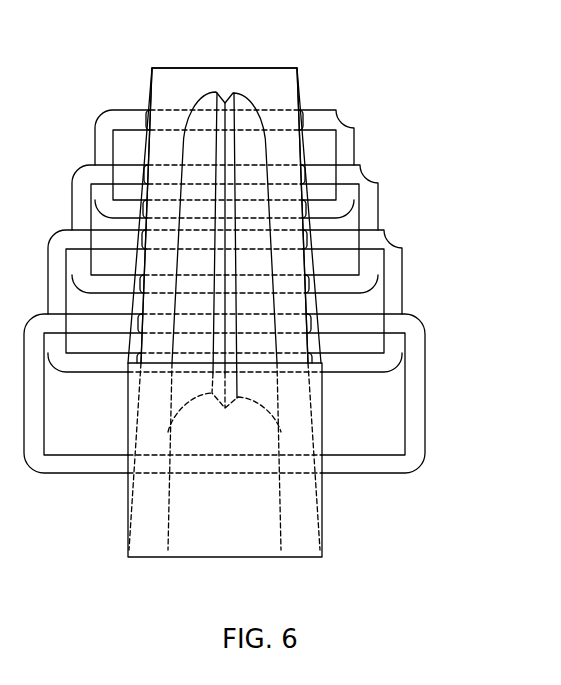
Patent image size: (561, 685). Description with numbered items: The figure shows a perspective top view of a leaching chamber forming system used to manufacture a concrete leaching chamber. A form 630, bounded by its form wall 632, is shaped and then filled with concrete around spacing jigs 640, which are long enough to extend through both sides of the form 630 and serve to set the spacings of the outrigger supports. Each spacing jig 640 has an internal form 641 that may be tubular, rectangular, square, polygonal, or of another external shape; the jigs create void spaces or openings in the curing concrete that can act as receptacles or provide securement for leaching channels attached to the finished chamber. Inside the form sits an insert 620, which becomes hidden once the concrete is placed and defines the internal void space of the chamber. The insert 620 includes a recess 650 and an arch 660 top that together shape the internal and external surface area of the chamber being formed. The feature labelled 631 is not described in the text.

The insert 620 is at (228, 540).
The form 630 is at (303, 546).
The inner wall of housing 631 is at (303, 158).
The form wall 632 is at (172, 83).
The spacing jigs 640 is at (418, 405).
The internal form 641 is at (224, 236).
The recess 650 is at (222, 97).
The arch top 660 is at (257, 100).